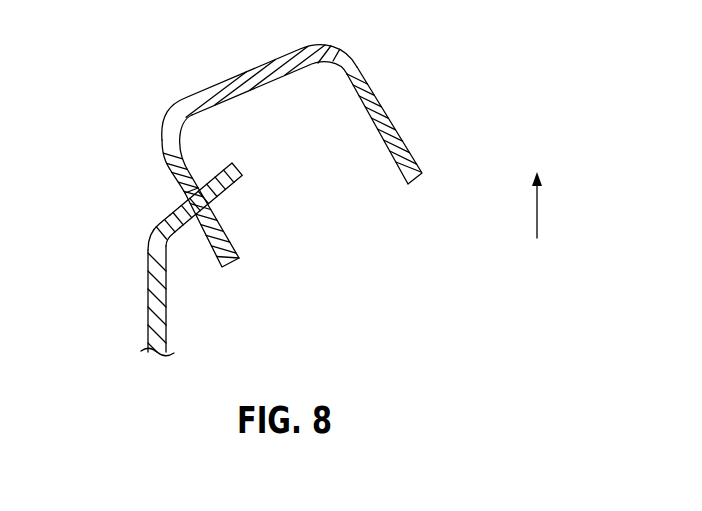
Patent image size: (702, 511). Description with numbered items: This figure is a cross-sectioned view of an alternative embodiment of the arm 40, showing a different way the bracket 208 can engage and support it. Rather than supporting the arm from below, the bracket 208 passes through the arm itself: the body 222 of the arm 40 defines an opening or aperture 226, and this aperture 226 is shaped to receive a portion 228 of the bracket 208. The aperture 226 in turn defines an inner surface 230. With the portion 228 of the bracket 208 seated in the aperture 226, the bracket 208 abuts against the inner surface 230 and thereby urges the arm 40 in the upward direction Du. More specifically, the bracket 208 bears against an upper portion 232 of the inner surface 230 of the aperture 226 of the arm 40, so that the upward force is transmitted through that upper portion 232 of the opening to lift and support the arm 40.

The arm 40 is at (420, 80).
The bracket 208 is at (170, 297).
The body 222 is at (296, 48).
The aperture 226 is at (204, 164).
The portion of the bracket 228 is at (172, 228).
The inner surface 230 is at (185, 206).
The upper portion of the inner surface 232 is at (223, 218).
The upward direction Du is at (557, 205).